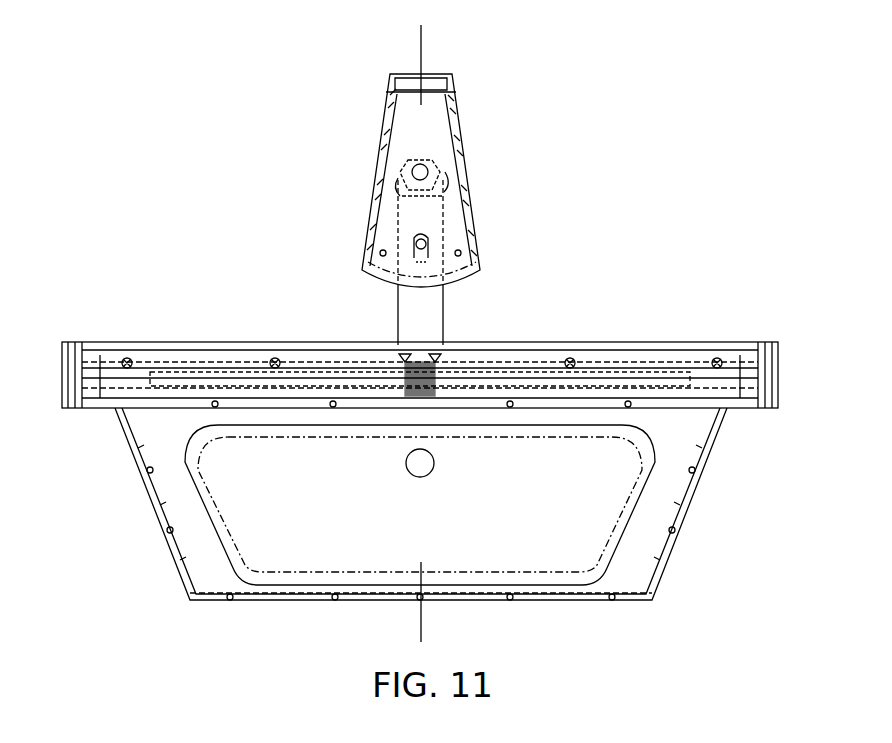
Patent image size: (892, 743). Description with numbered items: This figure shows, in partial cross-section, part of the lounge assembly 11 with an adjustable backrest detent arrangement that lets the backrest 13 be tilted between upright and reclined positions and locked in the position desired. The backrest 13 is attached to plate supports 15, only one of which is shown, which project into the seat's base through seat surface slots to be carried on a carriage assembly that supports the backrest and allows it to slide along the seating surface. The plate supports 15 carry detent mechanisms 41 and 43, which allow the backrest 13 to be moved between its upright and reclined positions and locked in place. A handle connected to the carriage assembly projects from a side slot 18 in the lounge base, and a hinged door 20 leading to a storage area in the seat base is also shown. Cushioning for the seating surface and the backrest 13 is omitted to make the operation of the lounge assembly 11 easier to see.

The lounge assembly 11 is at (624, 214).
The backrest 13 is at (425, 35).
The plate supports 15 is at (445, 322).
The side slot 18 is at (612, 390).
The hinged door 20 is at (612, 507).
The detent mechanism 41 is at (429, 177).
The detent mechanism 43 is at (428, 246).